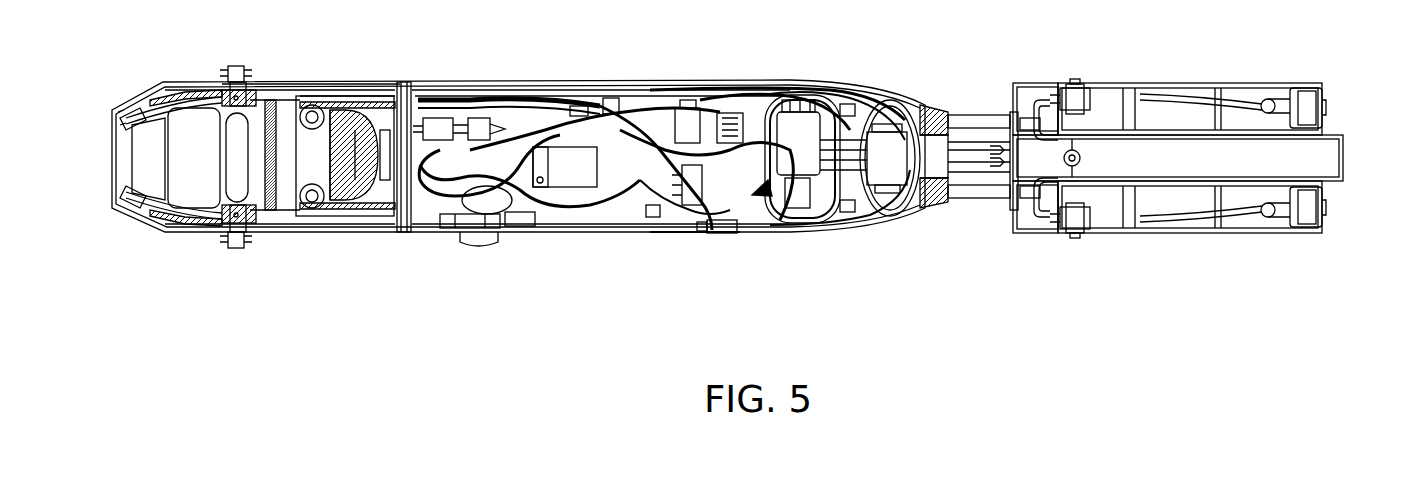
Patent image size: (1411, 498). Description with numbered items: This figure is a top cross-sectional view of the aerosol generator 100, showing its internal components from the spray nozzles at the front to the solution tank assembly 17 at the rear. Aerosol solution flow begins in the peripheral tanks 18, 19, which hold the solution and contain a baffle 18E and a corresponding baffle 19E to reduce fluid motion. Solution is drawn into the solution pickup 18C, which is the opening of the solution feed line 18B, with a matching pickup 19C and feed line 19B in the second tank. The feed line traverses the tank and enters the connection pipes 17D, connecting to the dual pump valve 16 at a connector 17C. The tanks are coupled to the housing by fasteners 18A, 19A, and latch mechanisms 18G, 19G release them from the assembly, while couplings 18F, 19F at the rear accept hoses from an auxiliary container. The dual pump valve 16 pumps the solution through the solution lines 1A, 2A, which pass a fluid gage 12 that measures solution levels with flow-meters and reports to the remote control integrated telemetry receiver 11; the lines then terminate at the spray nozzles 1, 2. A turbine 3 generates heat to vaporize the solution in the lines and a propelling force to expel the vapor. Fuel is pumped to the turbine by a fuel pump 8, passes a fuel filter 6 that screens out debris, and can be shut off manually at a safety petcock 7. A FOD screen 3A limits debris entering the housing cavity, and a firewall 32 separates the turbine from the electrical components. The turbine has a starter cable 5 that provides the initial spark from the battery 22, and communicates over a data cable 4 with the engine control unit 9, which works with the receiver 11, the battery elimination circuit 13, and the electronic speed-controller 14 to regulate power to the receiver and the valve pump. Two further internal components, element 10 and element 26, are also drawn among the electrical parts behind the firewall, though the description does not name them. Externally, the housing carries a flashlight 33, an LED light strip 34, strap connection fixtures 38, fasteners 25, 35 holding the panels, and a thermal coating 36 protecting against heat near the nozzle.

The spray nozzle 1 is at (112, 120).
The solution line 1A is at (352, 82).
The spray nozzle 2 is at (122, 218).
The solution line 2A is at (172, 236).
The turbine 3 is at (207, 210).
The FOD screen 3A is at (330, 216).
The data cable 4 is at (388, 218).
The starter cable 5 is at (470, 100).
The fuel filter 6 is at (422, 98).
The safety petcock 7 is at (463, 248).
The fuel pump 8 is at (565, 216).
The engine control unit 9 is at (650, 236).
The circuit element 10 is at (685, 240).
The remote control integrated telemetry receiver 11 is at (680, 102).
The fluid gage 12 is at (713, 236).
The battery elimination circuit 13 is at (732, 102).
The electronic speed-controller 14 is at (812, 236).
The dual pump valve 16 is at (912, 112).
The solution tank assembly 17 is at (1345, 152).
The connector 17C is at (1048, 220).
The connection pipes 17D is at (1034, 90).
The peripheral tank 18 is at (1152, 234).
The fastener 18A is at (1077, 240).
The solution feed line 18B is at (1260, 218).
The solution pickup 18C is at (1285, 216).
The baffle 18E is at (1218, 234).
The coupling 18F is at (1325, 214).
The latch mechanism 18G is at (1338, 191).
The peripheral tank 19 is at (1168, 84).
The fastener 19A is at (1077, 80).
The solution feed line 19B is at (1262, 100).
The solution pickup 19C is at (1300, 88).
The baffle 19E is at (1215, 87).
The coupling 19F is at (1338, 103).
The latch mechanism 19G is at (1318, 88).
The battery 22 is at (968, 115).
The fastener 25 is at (520, 86).
The bracket 26 is at (622, 92).
The firewall 32 is at (403, 82).
The flashlight 33 is at (182, 80).
The LED light strip 34 is at (795, 80).
The fastener 35 is at (298, 236).
The thermal coating 36 is at (135, 222).
The strap connection fixture 38 is at (290, 82).
The aerosol generator 100 is at (215, 80).